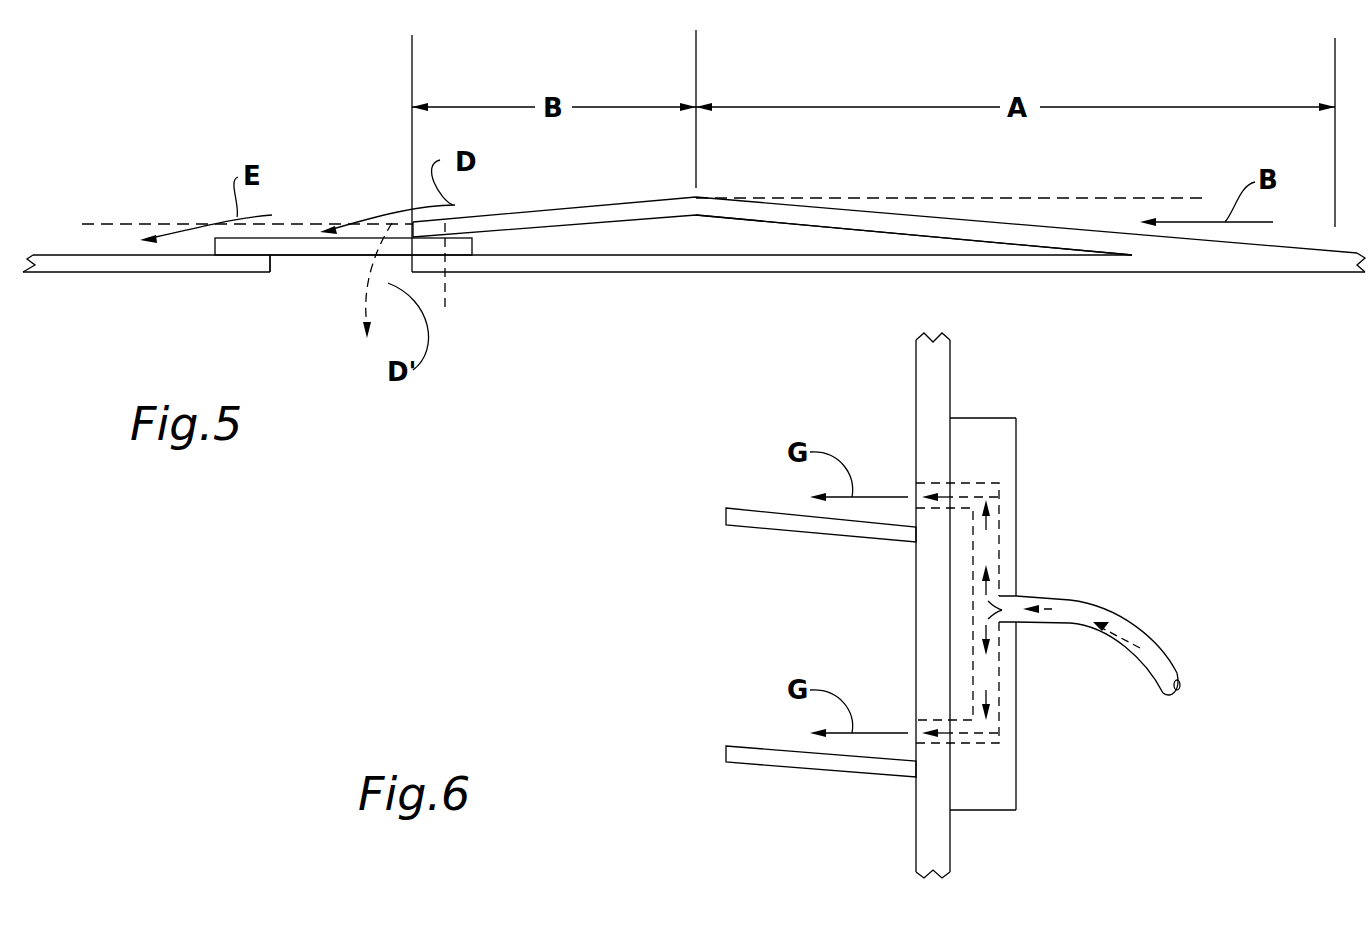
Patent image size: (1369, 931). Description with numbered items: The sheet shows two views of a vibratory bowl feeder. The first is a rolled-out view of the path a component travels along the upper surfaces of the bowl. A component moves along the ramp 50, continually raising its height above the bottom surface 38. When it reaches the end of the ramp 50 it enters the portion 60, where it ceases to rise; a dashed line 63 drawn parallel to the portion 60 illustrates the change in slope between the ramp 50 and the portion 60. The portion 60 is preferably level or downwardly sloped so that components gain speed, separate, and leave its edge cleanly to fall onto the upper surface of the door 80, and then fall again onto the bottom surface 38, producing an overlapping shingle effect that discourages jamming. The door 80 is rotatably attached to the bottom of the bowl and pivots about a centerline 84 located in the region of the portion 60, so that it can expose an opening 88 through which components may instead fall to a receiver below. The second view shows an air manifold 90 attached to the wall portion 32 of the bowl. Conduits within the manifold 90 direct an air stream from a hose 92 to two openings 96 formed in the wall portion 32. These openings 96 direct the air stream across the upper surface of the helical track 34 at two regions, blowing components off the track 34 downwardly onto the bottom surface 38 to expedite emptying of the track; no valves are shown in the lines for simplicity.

In FIG. 5, the bottom surface 38 is at (60, 263).
In FIG. 5, the dashed line 63 is at (125, 222).
In FIG. 5, the door 80 is at (272, 248).
In FIG. 5, the portion 60 is at (573, 220).
In FIG. 5, the ramp 50 is at (988, 237).
In FIG. 5, the centerline 84 is at (445, 285).
In FIG. 5, the opening 88 is at (287, 273).
In FIG. 6, the wall portion 32 is at (938, 355).
In FIG. 6, the manifold 90 is at (1002, 447).
In FIG. 6, the openings 96 is at (923, 485).
In FIG. 6, the helical track 34 is at (770, 522).
In FIG. 6, the hose 92 is at (1087, 607).